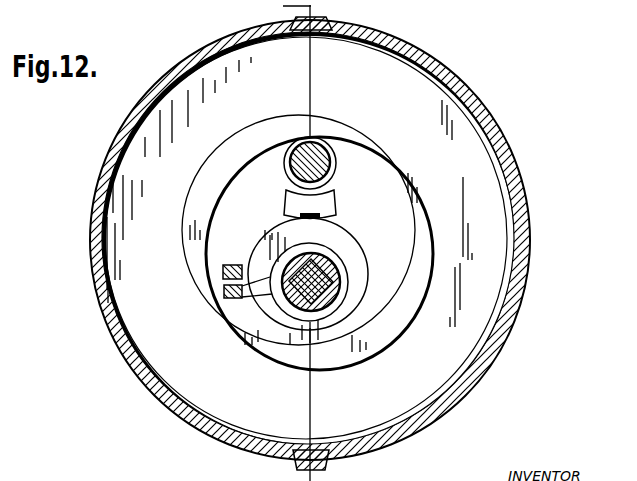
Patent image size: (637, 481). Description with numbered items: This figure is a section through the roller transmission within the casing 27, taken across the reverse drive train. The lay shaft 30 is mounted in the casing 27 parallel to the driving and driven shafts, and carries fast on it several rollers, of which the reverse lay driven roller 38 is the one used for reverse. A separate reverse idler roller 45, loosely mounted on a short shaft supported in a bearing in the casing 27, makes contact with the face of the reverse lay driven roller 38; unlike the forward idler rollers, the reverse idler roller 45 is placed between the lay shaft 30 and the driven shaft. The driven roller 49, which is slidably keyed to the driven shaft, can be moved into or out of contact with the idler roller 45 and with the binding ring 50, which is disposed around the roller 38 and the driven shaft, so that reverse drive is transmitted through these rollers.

The casing 27 is at (524, 206).
The binding ring 50 is at (357, 137).
The reverse lay driven roller 38 is at (335, 172).
The lay shaft 30 is at (298, 158).
The reverse idler roller 45 is at (338, 198).
The driven roller 49 is at (338, 240).